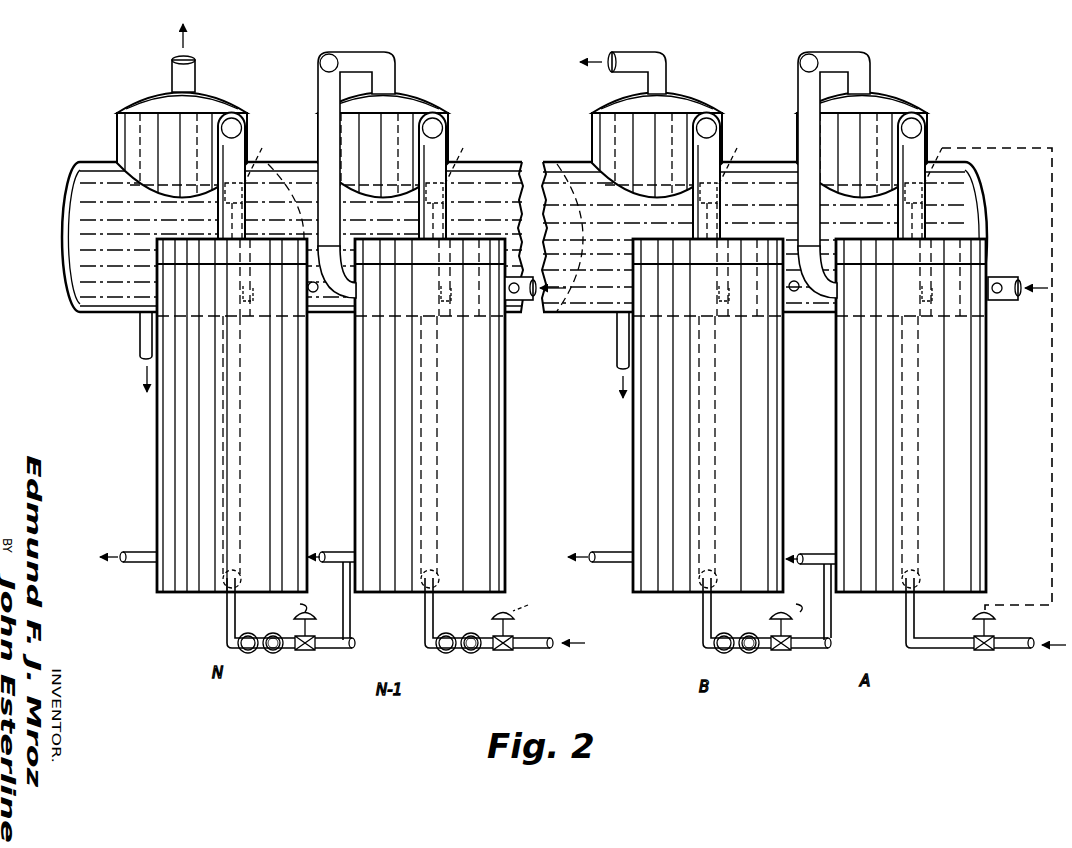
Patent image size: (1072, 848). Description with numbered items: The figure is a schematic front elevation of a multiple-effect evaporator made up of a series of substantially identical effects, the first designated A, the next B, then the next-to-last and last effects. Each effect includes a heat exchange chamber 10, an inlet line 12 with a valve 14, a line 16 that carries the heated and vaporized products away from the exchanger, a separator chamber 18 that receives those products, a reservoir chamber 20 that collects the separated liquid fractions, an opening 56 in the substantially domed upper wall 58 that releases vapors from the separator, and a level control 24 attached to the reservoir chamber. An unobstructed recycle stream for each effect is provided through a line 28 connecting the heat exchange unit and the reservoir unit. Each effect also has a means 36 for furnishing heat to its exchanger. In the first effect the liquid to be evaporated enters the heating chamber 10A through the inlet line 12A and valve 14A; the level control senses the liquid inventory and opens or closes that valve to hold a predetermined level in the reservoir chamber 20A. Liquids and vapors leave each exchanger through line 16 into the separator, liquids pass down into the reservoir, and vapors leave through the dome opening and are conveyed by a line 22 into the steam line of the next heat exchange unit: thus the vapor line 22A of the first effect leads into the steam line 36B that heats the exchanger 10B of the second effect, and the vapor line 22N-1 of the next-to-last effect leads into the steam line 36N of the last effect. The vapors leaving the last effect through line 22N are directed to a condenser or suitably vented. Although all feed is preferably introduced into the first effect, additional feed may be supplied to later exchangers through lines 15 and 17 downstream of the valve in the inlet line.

The heat exchange chamber 10 is at (157, 440).
The heat exchange chamber of first effect 10A is at (988, 440).
The heat exchange chamber of second effect 10B is at (633, 456).
The inlet line 12 is at (334, 650).
The inlet line of first effect 12A is at (1018, 646).
The valve 14 is at (303, 652).
The valve of first effect 14A is at (985, 652).
The additional feed line 15 is at (276, 656).
The line 16 is at (217, 220).
The additional feed line 17 is at (248, 653).
The separator chamber 18 is at (247, 121).
The reservoir chamber 20 is at (66, 258).
The reservoir chamber of first effect 20A is at (982, 206).
The line 22 is at (630, 52).
The vapor line of first effect 22A is at (836, 42).
The vapor line of last effect 22N is at (172, 80).
The vapor line of next-to-last effect 22N-1 is at (347, 52).
The level control 24 is at (244, 194).
The recycle line 28 is at (216, 412).
The heating means line 36 is at (530, 303).
The steam line of second effect 36B is at (826, 287).
The steam line of last effect 36N is at (345, 286).
The opening 56 is at (522, 146).
The domed upper wall 58 is at (203, 96).